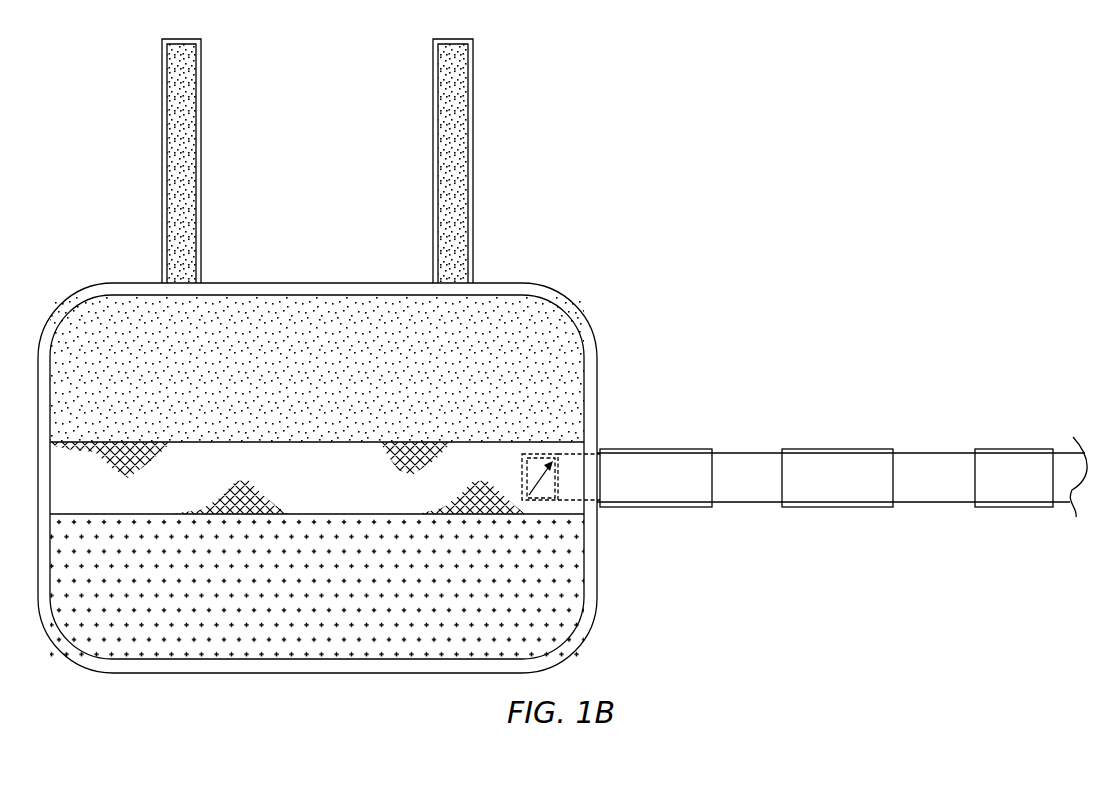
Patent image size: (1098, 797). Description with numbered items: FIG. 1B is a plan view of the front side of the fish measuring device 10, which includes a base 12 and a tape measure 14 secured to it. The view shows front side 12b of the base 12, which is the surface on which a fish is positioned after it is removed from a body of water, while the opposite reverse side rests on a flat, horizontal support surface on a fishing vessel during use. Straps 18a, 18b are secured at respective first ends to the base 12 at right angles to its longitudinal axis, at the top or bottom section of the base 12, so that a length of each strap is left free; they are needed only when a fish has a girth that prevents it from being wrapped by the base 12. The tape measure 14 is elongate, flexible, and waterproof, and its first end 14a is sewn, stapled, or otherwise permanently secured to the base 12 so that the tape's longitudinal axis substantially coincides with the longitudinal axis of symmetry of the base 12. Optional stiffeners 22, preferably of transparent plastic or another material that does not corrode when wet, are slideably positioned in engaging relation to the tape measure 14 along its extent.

The fish measuring device 10 is at (762, 254).
The base 12 is at (287, 673).
The front side 12b is at (357, 308).
The tape measure 14 is at (691, 452).
The first end 14a is at (545, 504).
The strap 18a is at (203, 170).
The strap 18b is at (475, 170).
The stiffeners 22 is at (656, 510).